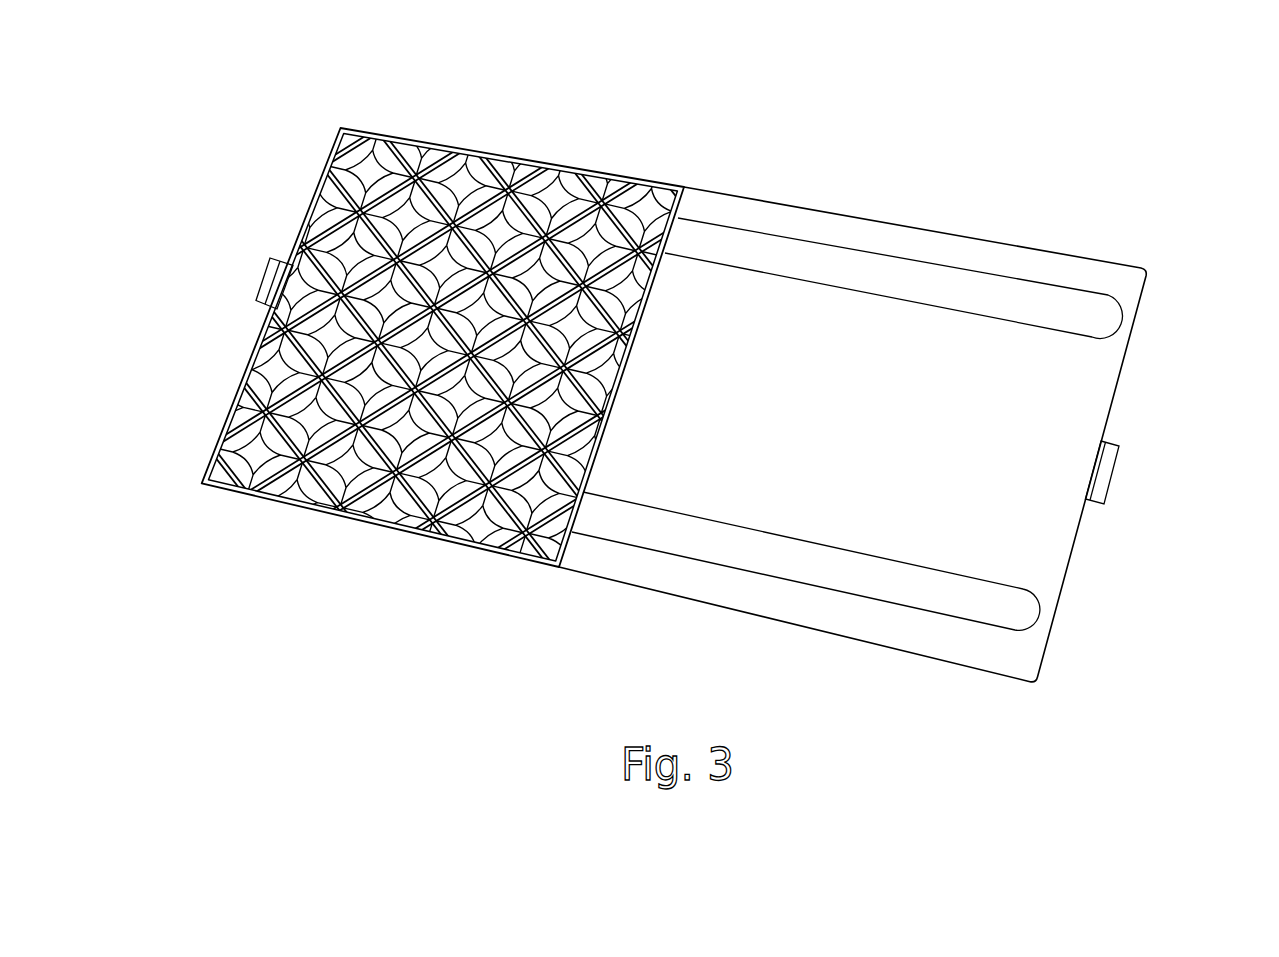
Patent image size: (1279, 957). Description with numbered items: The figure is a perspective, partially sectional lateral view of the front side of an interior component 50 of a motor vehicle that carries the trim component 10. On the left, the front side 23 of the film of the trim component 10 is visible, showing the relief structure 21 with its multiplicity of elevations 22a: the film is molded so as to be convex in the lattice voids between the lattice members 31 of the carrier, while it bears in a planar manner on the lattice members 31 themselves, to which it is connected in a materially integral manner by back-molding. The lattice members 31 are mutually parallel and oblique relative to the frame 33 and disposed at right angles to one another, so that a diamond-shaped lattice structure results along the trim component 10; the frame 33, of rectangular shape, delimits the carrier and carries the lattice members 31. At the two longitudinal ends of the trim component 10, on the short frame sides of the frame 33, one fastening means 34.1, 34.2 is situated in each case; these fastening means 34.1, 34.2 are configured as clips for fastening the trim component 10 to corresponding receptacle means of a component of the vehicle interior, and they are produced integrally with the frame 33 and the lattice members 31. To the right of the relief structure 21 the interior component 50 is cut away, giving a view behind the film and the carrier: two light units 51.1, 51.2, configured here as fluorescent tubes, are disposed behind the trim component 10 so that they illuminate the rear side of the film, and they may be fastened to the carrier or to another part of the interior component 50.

The trim component 10 is at (515, 443).
The relief structure 21 is at (447, 202).
The elevations 22a is at (515, 443).
The front side 23 is at (365, 162).
The lattice members 31 is at (420, 167).
The frame 33 is at (331, 163).
The fastening means 34.1 is at (1113, 473).
The fastening means 34.2 is at (265, 285).
The interior component 50 is at (905, 418).
The light unit 51.1 is at (983, 297).
The light unit 51.2 is at (928, 595).